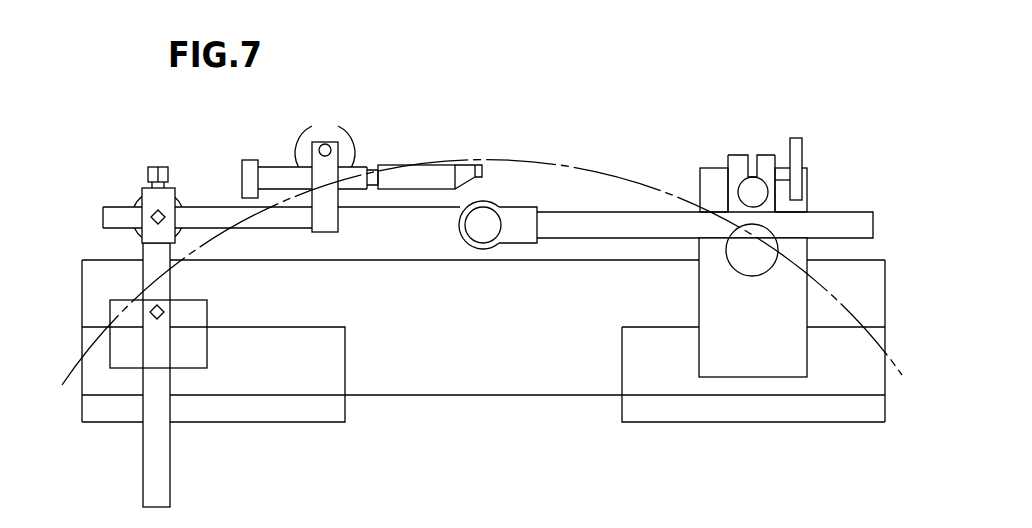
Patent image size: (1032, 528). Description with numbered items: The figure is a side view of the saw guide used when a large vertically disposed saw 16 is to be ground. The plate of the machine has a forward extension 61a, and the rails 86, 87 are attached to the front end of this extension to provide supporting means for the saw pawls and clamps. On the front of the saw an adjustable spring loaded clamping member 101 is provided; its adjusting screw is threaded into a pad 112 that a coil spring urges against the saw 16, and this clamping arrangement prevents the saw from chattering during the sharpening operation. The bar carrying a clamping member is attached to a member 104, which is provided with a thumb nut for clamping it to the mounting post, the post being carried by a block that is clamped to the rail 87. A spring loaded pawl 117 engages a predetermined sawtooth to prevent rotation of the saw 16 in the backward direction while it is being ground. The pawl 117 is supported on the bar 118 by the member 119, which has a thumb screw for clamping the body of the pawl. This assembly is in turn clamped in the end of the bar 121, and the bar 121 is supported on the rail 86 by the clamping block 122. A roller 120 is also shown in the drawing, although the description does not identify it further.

The saw 16 is at (518, 159).
The forward extension 61a is at (548, 398).
The rail 86 is at (302, 337).
The rail 87 is at (656, 335).
The clamping member 101 is at (473, 230).
The member 104 is at (728, 192).
The pad 112 is at (462, 215).
The spring loaded pawl 117 is at (461, 170).
The bar 118 is at (212, 207).
The member 119 is at (333, 210).
The roller 120 is at (353, 143).
The bar 121 is at (150, 255).
The clamping block 122 is at (203, 315).